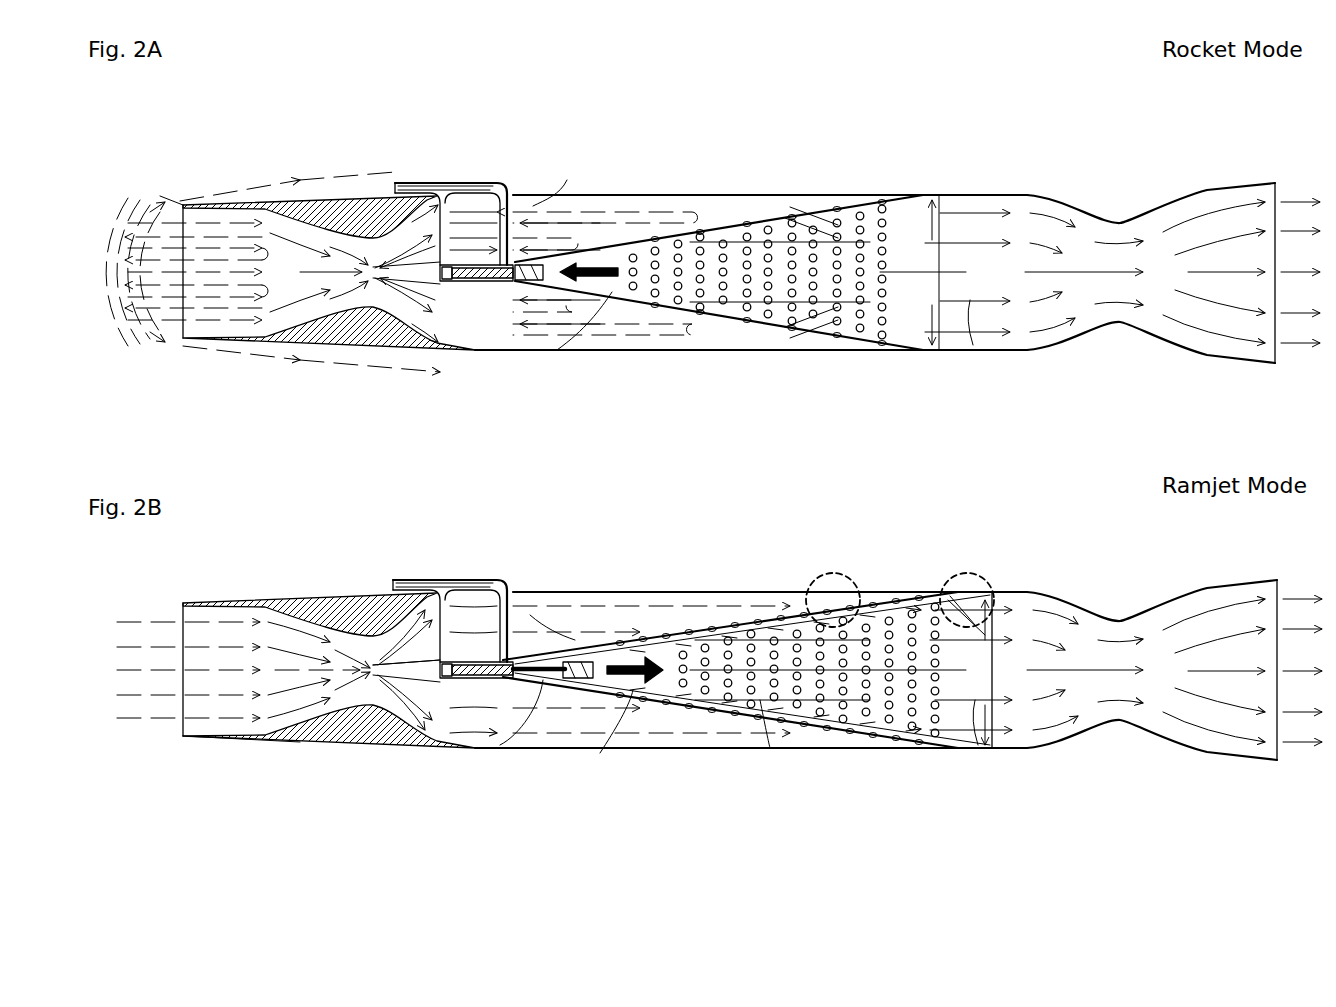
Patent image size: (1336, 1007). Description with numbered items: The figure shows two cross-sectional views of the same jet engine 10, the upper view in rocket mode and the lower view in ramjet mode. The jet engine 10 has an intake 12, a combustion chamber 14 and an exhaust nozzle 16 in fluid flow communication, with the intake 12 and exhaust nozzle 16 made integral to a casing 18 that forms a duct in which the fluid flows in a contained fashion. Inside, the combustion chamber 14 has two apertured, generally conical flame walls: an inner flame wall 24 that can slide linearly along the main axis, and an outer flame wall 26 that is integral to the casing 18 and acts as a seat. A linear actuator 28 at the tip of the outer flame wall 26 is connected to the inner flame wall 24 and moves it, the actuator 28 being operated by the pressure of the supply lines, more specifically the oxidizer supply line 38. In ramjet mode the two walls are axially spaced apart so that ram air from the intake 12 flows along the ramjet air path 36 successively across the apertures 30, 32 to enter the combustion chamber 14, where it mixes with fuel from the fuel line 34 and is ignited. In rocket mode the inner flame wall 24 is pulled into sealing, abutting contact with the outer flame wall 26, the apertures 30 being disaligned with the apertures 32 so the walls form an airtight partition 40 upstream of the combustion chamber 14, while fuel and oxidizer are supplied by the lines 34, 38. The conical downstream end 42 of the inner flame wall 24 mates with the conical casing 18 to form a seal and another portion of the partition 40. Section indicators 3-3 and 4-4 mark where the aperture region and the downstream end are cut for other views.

In FIG. 2A, the jet engine 10 is at (222, 393).
In FIG. 2A, the intake 12 is at (237, 250).
In FIG. 2B, the intake 12 is at (247, 677).
In FIG. 2A, the combustion chamber 14 is at (857, 293).
In FIG. 2B, the combustion chamber 14 is at (898, 648).
In FIG. 2A, the exhaust nozzle 16 is at (1123, 293).
In FIG. 2B, the exhaust nozzle 16 is at (1160, 647).
In FIG. 2A, the casing 18 is at (765, 195).
In FIG. 2B, the casing 18 is at (765, 592).
In FIG. 2A, the inner flame wall 24 is at (733, 283).
In FIG. 2A, the outer flame wall 26 is at (807, 333).
In FIG. 2A, the linear actuator 28 is at (477, 307).
In FIG. 2B, the linear actuator 28 is at (462, 563).
In FIG. 2B, the apertures of the inner flame wall 30 is at (627, 640).
In FIG. 2B, the apertures of the outer flame wall 32 is at (740, 643).
In FIG. 2B, the fuel line 34 is at (393, 590).
In FIG. 2B, the ramjet air path 36 is at (202, 677).
In FIG. 2B, the oxidizer supply line 38 is at (505, 578).
In FIG. 2A, the partition 40 is at (607, 248).
In FIG. 2B, the partition 40 is at (551, 670).
In FIG. 2B, the conical downstream end 42 is at (968, 594).
In FIG. 2B, the section line 3-3 is at (828, 581).
In FIG. 2B, the section line 4-4 is at (990, 580).